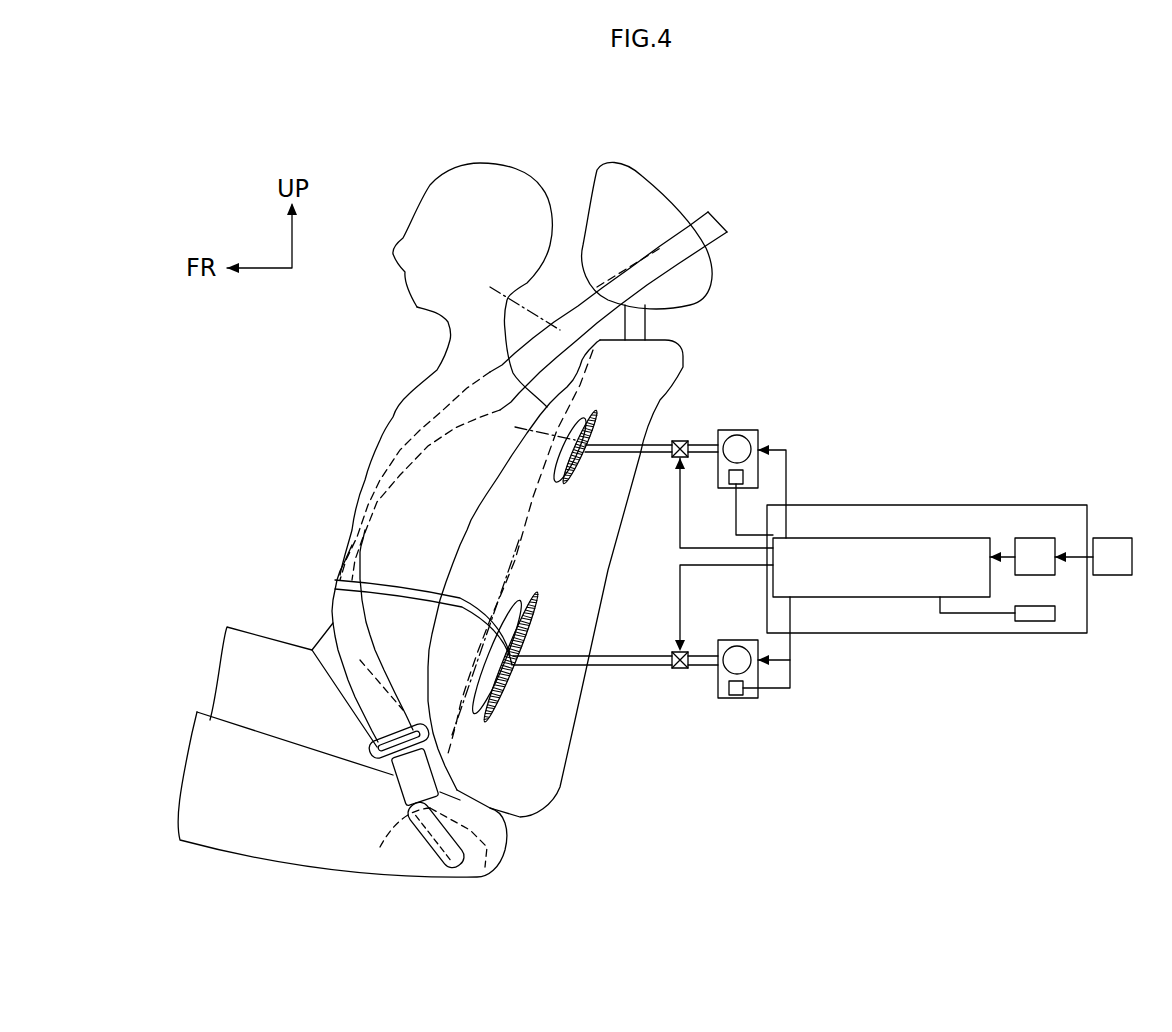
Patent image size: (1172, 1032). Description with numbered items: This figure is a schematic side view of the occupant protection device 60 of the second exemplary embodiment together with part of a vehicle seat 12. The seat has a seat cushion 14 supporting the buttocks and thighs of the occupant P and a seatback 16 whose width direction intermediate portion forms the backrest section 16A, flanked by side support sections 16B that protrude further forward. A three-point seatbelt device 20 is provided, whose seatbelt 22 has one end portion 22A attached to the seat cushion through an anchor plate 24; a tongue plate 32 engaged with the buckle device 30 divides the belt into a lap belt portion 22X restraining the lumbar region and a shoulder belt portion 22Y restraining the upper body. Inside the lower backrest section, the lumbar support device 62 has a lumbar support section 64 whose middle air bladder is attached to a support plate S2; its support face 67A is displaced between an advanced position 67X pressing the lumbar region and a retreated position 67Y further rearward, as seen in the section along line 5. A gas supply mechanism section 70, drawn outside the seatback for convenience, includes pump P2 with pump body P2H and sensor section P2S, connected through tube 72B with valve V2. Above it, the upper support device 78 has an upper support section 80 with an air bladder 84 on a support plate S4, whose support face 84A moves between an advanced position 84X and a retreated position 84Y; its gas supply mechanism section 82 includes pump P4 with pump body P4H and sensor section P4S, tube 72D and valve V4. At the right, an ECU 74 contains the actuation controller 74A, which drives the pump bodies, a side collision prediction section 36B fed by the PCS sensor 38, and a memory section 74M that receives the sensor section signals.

The occupant P is at (407, 376).
The section line 5- 5 is at (430, 617).
The vehicle seat 12 is at (786, 238).
The seat cushion 14 is at (207, 733).
The seatback 16 is at (690, 370).
The backrest section 16A is at (485, 505).
The side support section 16B is at (478, 524).
The three-point seatbelt device 20 is at (698, 203).
The seatbelt 22 is at (556, 320).
The one end portion of the seatbelt 22A is at (413, 828).
The lap belt portion 22X is at (327, 657).
The shoulder belt portion 22Y is at (353, 602).
The anchor plate 24 is at (460, 858).
The buckle device 30 is at (397, 783).
The tongue plate 32 is at (367, 743).
The side collision prediction section 36B is at (1036, 537).
The PCS sensor 38 is at (1112, 537).
The occupant protection device 60 is at (797, 128).
The lumbar support device 62 is at (505, 592).
The lumbar support section 64 is at (497, 668).
The support face 67A is at (265, 523).
The advanced position 67X is at (345, 575).
The retreated position 67Y is at (335, 582).
The gas supply mechanism section 70 is at (673, 702).
The tube 72B is at (630, 653).
The tube 72D is at (627, 454).
The ECU 74 is at (887, 504).
The actuation controller 74A is at (823, 537).
The memory section 74M is at (1056, 621).
The upper support device 78 is at (557, 404).
The upper support section 80 is at (547, 464).
The gas supply mechanism section 82 is at (728, 382).
The air bladder 84 is at (560, 428).
The support face 84A is at (402, 400).
The advanced position 84X is at (545, 457).
The retreated position 84Y is at (490, 287).
The support plate S2 is at (528, 630).
The support plate S4 is at (597, 437).
The valve V2 is at (680, 646).
The valve V4 is at (672, 458).
The pump P2 is at (720, 642).
The pump body P2H is at (738, 644).
The sensor section P2S is at (733, 695).
The pump P4 is at (730, 428).
The pump body P4H is at (740, 436).
The sensor section P4S is at (727, 480).